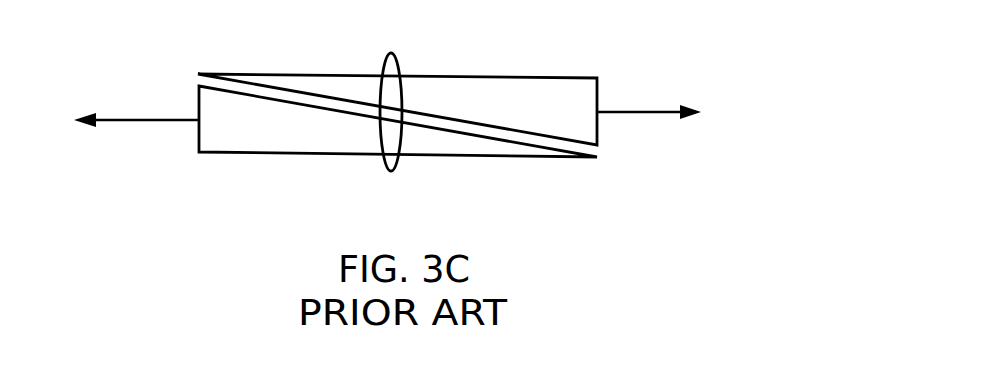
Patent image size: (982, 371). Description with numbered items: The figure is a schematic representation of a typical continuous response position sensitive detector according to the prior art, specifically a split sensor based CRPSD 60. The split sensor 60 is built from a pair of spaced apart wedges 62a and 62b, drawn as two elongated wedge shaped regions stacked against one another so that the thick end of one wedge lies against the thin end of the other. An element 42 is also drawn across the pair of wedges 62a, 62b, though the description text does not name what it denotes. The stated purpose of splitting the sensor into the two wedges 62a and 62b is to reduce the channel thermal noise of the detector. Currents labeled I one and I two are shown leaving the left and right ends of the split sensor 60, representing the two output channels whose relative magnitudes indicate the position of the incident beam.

The split sensor based CRPSD 60 is at (131, 190).
The wedge 62a is at (530, 77).
The wedge 62b is at (257, 153).
The Faraday rotator 42 is at (392, 171).